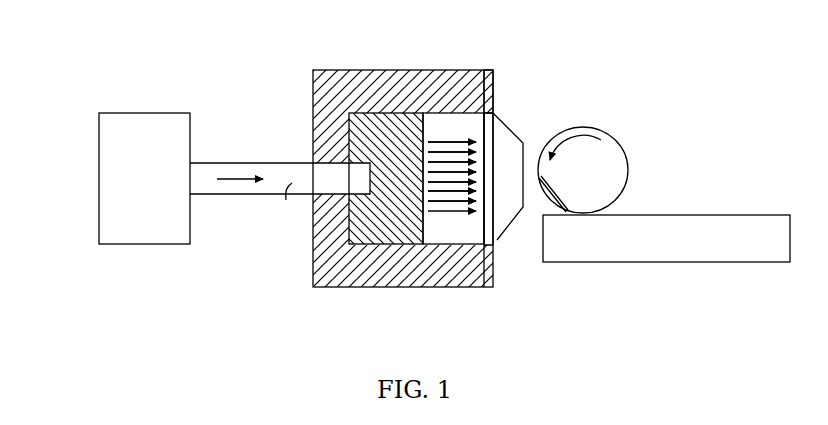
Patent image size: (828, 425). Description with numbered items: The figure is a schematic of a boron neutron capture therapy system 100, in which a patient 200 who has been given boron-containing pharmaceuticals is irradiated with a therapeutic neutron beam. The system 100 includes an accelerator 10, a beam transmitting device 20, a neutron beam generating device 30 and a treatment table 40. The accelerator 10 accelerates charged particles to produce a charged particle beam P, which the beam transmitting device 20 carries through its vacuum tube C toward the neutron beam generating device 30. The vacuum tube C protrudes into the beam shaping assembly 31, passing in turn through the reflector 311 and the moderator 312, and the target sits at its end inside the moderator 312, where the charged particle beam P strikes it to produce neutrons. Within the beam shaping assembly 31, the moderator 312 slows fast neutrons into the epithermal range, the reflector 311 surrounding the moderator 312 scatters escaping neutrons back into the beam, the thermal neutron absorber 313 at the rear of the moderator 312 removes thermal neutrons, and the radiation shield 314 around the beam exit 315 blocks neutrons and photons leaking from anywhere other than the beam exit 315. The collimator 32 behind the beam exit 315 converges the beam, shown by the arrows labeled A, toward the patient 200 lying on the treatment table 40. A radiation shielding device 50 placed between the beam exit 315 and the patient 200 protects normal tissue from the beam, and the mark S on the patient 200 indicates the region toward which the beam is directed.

The boron neutron capture therapy system 100 is at (72, 52).
The accelerator 10 is at (113, 218).
The beam transmitting device 20 is at (257, 160).
The neutron beam generating device 30 is at (415, 176).
The beam shaping assembly 31 is at (312, 284).
The reflector 311 is at (313, 97).
The moderator 312 is at (313, 249).
The thermal neutron absorber 313 is at (426, 228).
The radiation shield 314 is at (494, 84).
The beam exit 315 is at (495, 128).
The collimator 32 is at (503, 208).
The treatment table 40 is at (653, 256).
The radiation shielding device 50 is at (548, 140).
The patient 200 is at (624, 176).
The air flow A is at (437, 142).
The charged particle beam P is at (236, 181).
The vacuum tube C is at (286, 199).
The rotation direction S is at (604, 132).